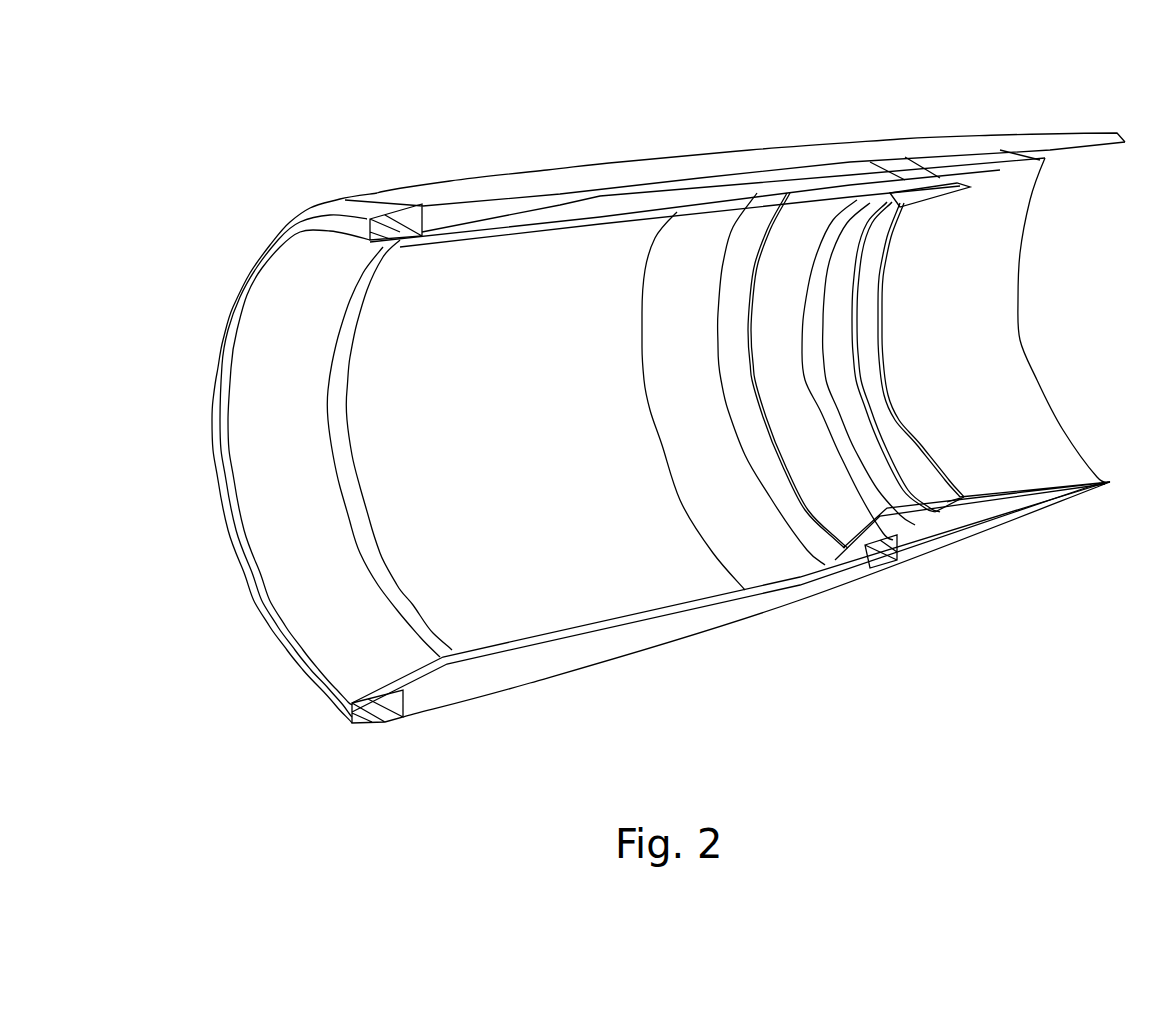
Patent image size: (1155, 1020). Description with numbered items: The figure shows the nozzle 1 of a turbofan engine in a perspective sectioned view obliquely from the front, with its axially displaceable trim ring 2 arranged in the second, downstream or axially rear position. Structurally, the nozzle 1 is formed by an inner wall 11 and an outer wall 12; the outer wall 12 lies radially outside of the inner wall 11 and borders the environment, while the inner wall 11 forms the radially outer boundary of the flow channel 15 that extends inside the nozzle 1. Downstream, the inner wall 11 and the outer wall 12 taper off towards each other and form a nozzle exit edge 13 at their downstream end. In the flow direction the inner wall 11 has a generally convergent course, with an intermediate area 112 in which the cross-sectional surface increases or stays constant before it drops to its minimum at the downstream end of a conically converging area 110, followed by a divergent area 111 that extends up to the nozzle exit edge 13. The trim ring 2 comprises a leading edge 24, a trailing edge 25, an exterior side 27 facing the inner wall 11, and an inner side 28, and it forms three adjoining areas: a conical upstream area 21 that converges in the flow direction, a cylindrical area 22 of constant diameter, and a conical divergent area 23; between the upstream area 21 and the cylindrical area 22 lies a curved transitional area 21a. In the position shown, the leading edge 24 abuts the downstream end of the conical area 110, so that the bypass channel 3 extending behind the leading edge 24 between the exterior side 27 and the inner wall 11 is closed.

The nozzle 1 is at (672, 664).
The trim ring 2 is at (750, 379).
The bypass channel 3 is at (910, 518).
The inner wall 11 is at (727, 197).
The outer wall 12 is at (622, 167).
The nozzle exit edge 13 is at (1023, 307).
The flow channel 15 is at (543, 451).
The upstream area 21 is at (767, 355).
The transitional area 21a is at (830, 408).
The cylindrical area 22 is at (880, 460).
The divergent area 23 is at (884, 397).
The leading edge 24 is at (795, 497).
The trailing edge 25 is at (881, 322).
The exterior side 27 is at (937, 192).
The inner side 28 is at (868, 268).
The conically converging area 110 is at (793, 577).
The divergent area 111 is at (898, 560).
The intermediate area 112 is at (532, 638).